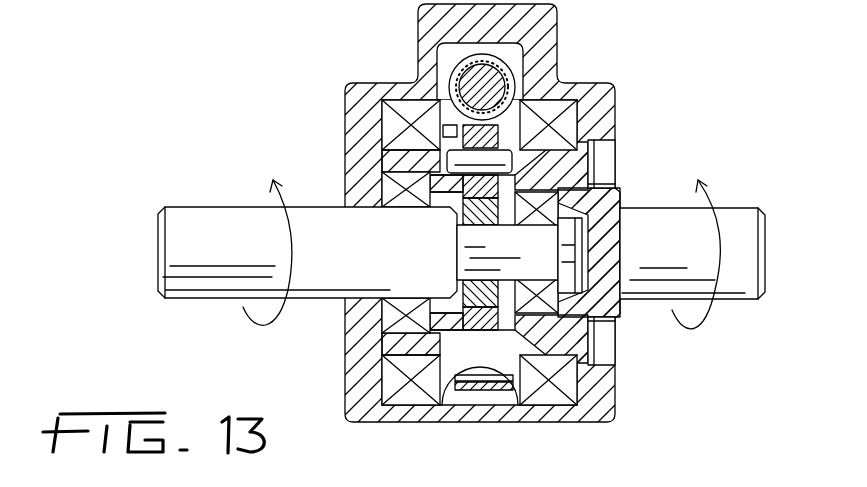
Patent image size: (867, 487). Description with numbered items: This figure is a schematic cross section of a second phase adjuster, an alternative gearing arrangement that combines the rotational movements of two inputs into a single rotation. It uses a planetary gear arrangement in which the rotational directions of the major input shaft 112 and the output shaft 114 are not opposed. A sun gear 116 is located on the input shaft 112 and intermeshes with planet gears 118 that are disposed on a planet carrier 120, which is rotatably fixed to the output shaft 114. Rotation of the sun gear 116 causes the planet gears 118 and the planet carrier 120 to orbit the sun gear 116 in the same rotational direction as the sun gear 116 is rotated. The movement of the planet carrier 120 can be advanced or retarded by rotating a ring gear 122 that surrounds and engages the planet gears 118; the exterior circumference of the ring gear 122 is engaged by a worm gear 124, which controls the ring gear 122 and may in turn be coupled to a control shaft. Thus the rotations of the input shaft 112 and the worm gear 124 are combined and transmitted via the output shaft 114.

The input shaft 112 is at (220, 272).
The output shaft 114 is at (740, 217).
The sun gear 116 is at (457, 290).
The planet gears 118 is at (568, 160).
The planet carrier 120 is at (590, 172).
The ring gear 122 is at (445, 112).
The worm gear 124 is at (493, 80).